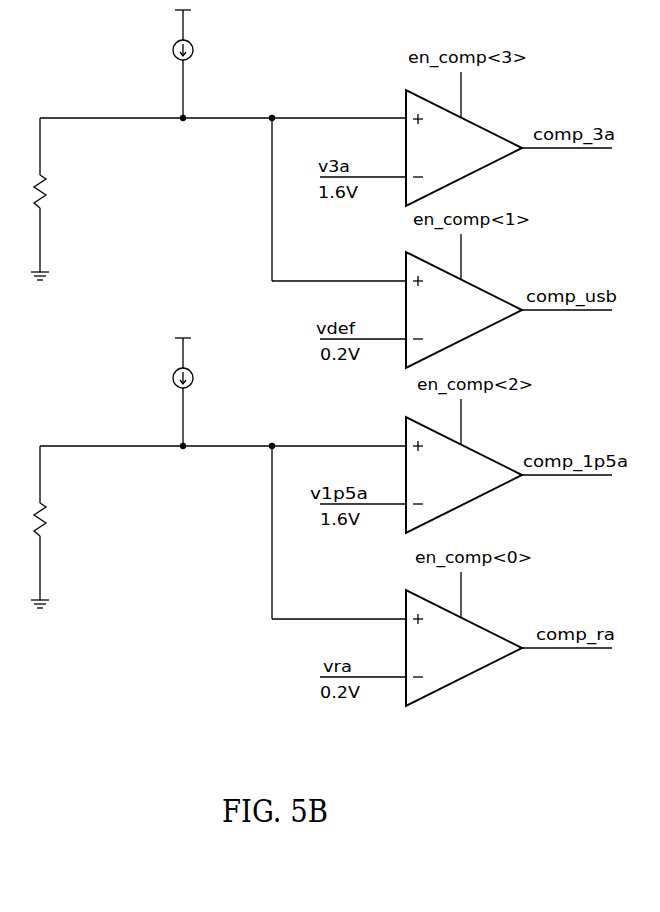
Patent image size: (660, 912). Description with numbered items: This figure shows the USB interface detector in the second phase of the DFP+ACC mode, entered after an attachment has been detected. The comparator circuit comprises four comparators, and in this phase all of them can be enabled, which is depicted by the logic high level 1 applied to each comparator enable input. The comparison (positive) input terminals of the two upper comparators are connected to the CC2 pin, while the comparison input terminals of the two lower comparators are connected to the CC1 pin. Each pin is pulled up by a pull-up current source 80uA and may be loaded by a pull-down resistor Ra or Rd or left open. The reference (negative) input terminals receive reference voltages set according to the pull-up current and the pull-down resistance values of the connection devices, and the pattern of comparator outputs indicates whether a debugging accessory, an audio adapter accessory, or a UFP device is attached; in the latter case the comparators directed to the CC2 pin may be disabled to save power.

The CC2 pin CC2 is at (218, 188).
The CC1 pin CC1 is at (218, 521).
The pull-up current source 80uA is at (209, 228).
The logic high level 1 is at (472, 345).